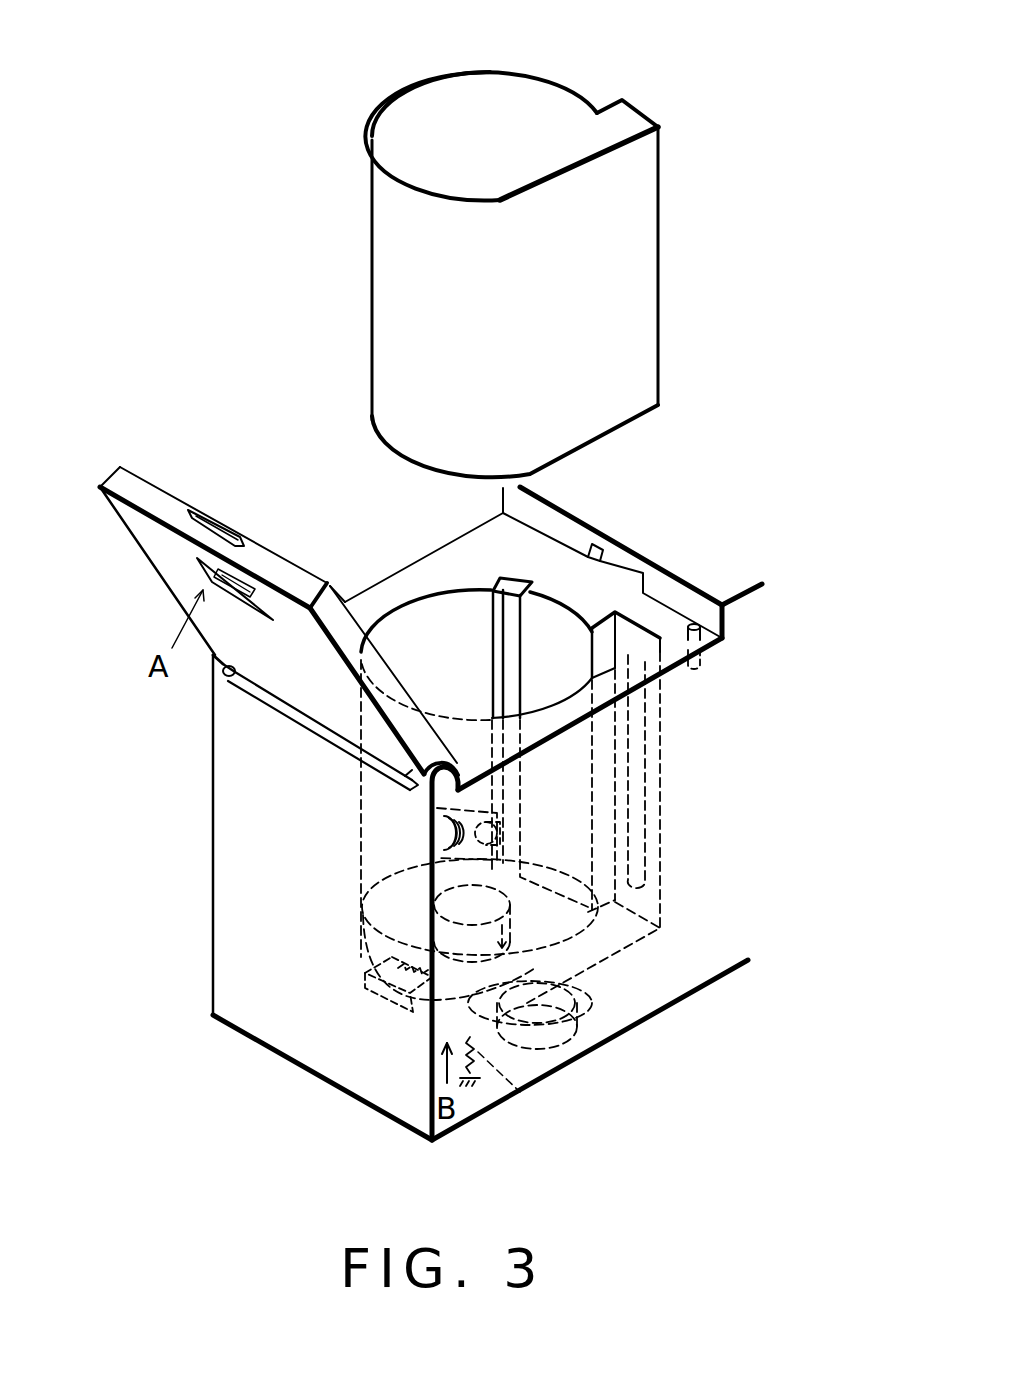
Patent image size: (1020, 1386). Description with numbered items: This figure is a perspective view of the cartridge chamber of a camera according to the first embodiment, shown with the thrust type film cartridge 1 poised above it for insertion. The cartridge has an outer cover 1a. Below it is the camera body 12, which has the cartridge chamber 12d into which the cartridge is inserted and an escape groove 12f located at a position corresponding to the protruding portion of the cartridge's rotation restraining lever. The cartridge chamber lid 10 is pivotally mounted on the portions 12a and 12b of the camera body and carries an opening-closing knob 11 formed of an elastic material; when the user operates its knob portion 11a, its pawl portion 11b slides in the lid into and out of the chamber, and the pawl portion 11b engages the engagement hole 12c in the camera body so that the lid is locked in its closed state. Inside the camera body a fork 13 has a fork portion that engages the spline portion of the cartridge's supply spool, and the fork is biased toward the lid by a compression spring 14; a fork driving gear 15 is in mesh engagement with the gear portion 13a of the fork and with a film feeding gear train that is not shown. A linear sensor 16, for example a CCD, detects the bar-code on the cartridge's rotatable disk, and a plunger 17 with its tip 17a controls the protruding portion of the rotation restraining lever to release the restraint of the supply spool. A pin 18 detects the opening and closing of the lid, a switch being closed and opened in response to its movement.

The thrust type film cartridge 1 is at (558, 84).
The outer cover 1a is at (397, 120).
The cartridge chamber lid 10 is at (270, 562).
The opening-closing knob 11 is at (197, 508).
The knob portion 11a is at (203, 576).
The pawl portion 11b is at (222, 527).
The camera body 12 is at (550, 557).
The portion of camera body 12a is at (430, 797).
The portion of camera body 12b is at (213, 668).
The engagement hole 12c is at (618, 573).
The cartridge chamber 12d is at (418, 630).
The escape groove 12f is at (510, 592).
The fork 13 is at (363, 912).
The gear portion 13a is at (582, 987).
The compression spring 14 is at (520, 1092).
The fork driving gear 15 is at (563, 1047).
The linear sensor 16 is at (365, 1003).
The plunger 17 is at (432, 852).
The plunger 17a is at (497, 834).
The pin 18 is at (703, 670).